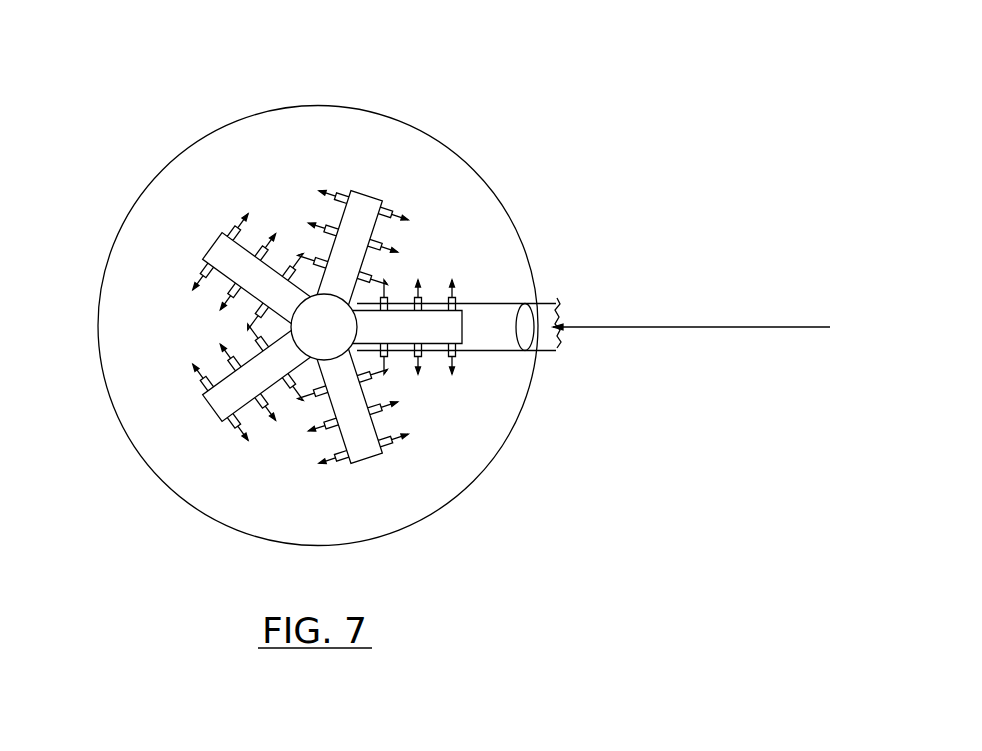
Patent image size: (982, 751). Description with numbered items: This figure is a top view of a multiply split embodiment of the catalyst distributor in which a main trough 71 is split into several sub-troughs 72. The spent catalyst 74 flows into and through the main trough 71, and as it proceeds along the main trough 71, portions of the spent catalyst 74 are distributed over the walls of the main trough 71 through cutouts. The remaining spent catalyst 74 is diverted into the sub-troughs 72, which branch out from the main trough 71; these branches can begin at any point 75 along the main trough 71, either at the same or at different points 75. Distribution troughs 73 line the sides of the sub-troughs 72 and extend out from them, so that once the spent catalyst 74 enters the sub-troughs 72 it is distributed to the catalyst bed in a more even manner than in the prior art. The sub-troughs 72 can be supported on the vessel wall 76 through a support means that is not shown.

The main trough 71 is at (488, 302).
The sub-troughs 72 is at (366, 196).
The distribution troughs 73 is at (193, 275).
The spent catalyst 74 is at (717, 321).
The point along the main trough 75 is at (324, 327).
The vessel wall 76 is at (167, 171).